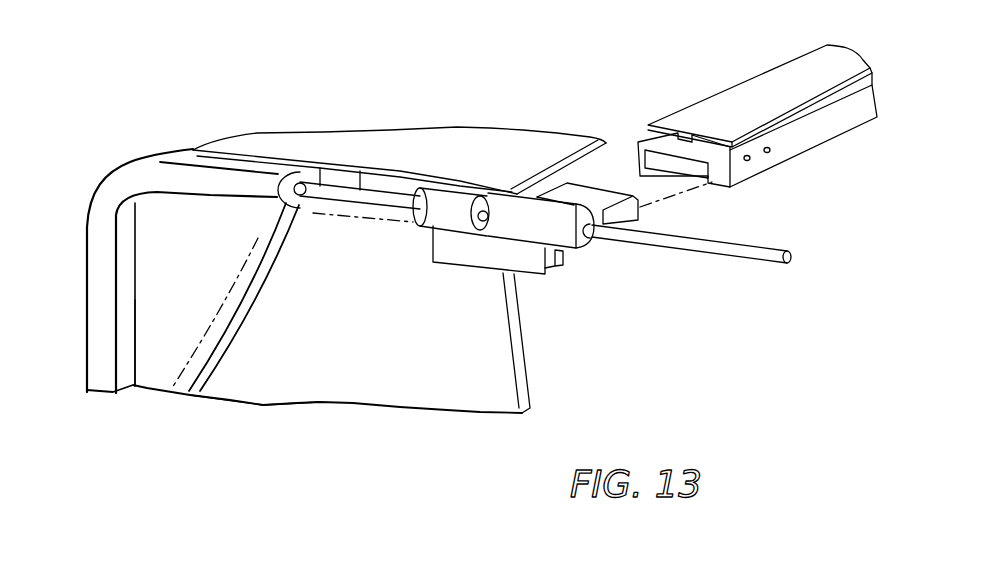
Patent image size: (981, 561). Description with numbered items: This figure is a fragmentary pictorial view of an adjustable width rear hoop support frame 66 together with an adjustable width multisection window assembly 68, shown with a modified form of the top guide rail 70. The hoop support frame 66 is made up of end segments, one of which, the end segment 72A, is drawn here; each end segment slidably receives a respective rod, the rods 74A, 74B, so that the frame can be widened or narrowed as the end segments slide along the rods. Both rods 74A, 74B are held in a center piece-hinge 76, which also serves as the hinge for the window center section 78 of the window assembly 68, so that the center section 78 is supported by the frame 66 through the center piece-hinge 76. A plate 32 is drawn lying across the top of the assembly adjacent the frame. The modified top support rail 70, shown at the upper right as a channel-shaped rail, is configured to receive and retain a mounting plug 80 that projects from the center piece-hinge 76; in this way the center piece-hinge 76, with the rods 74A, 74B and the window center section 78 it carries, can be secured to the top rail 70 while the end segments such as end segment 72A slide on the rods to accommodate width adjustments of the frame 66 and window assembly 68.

The plate 32 is at (478, 144).
The adjustable width rear hoop support frame 66 is at (243, 166).
The multisection window assembly 68 is at (289, 405).
The top guide rail 70 is at (740, 92).
The end segment 72A is at (100, 269).
The rod 74A is at (358, 176).
The rod 74B is at (676, 250).
The center piece-hinge 76 is at (443, 210).
The window center section 78 is at (408, 349).
The mounting plug 80 is at (598, 195).